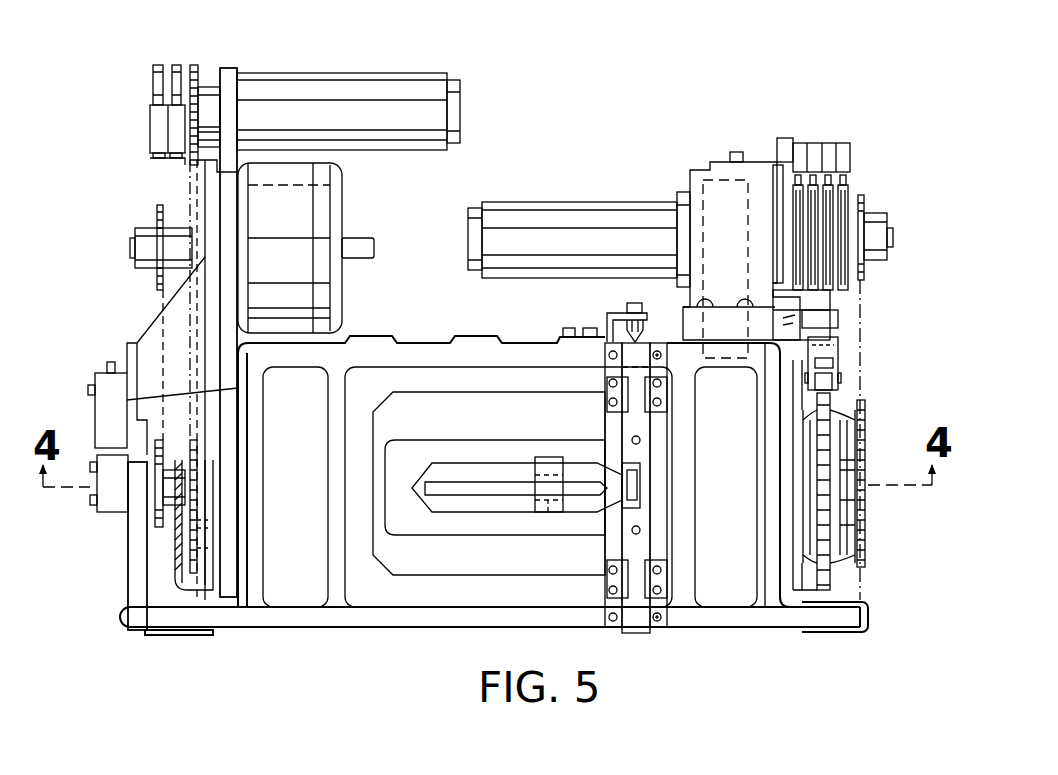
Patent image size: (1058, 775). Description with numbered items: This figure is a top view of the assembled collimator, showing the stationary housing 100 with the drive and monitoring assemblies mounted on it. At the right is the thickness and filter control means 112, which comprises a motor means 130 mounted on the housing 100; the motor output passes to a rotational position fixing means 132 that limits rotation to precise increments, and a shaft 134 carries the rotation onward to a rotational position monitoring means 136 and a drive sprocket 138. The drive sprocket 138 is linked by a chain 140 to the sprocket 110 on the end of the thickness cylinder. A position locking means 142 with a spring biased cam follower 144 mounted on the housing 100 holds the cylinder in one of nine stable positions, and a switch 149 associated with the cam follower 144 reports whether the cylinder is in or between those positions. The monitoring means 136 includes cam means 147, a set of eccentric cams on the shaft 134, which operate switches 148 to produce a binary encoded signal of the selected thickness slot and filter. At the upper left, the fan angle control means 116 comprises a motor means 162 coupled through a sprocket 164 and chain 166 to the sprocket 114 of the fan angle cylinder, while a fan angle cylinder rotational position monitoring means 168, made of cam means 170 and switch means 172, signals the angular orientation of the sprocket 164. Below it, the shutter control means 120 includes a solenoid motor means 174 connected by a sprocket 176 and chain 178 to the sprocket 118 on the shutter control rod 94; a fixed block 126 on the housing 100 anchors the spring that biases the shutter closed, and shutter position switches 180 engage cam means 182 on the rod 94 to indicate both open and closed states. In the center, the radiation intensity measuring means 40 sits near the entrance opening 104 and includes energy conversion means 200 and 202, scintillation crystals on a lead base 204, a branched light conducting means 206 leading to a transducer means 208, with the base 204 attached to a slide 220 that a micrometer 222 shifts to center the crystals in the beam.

The radiation intensity measuring means 40 is at (527, 452).
The shutter control rod 94 is at (147, 488).
The stationary housing 100 is at (710, 595).
The entrance opening 104 is at (475, 495).
The sprocket 110 is at (852, 523).
The thickness and filter control means 112 is at (676, 176).
The sprocket 114 is at (200, 548).
The fan angle control means 116 is at (268, 66).
The sprocket 118 is at (158, 528).
The shutter control means 120 is at (134, 224).
The fixed block 126 is at (175, 590).
The motor means 130 is at (588, 236).
The rotational position fixing means 132 is at (735, 178).
The shaft 134 is at (862, 247).
The rotational position monitoring means 136 is at (857, 170).
The drive sprocket 138 is at (855, 232).
The chain 140 is at (868, 322).
The position locking means 142 is at (840, 366).
The cam follower 144 is at (818, 378).
The cam means 147 is at (800, 268).
The switches 148 is at (853, 130).
The switch 149 is at (838, 326).
The motor means 162 is at (350, 112).
The sprocket 164 is at (196, 68).
The chain 166 is at (190, 322).
The fan angle cylinder rotational position monitoring means 168 is at (146, 132).
The cam means 170 is at (195, 60).
The switch means 172 is at (190, 166).
The solenoid motor means 174 is at (305, 249).
The sprocket 176 is at (160, 255).
The chain 178 is at (155, 338).
The shutter position switches 180 is at (110, 397).
The cam means 182 is at (117, 492).
The radiation sensitive energy conversion means 200 is at (558, 468).
The radiation sensitive energy conversion means 202 is at (540, 528).
The lead base 204 is at (585, 517).
The branched light conducting means 206 is at (602, 473).
The transducer means 208 is at (632, 485).
The slide 220 is at (637, 550).
The micrometer 222 is at (631, 309).